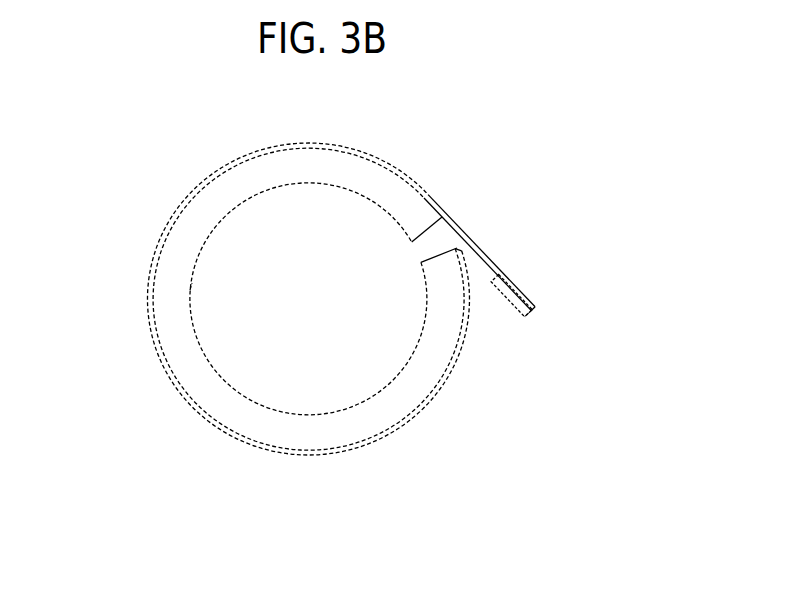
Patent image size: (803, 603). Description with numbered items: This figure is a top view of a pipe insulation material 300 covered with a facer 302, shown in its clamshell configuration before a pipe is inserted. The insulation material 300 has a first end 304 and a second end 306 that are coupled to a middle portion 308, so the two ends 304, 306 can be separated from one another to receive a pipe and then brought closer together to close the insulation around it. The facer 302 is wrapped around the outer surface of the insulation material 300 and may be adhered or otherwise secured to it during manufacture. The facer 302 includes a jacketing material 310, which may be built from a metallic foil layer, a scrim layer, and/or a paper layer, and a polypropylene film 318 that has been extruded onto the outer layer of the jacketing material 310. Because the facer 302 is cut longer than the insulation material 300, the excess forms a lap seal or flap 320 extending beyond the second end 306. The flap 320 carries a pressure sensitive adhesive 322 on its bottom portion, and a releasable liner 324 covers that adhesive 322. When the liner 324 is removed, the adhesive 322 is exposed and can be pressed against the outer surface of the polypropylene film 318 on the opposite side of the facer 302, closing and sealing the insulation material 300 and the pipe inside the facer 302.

The pipe insulation material 300 is at (195, 265).
The facer 302 is at (480, 242).
The first end 304 is at (423, 338).
The second end 306 is at (393, 218).
The middle portion 308 is at (189, 289).
The jacketing material 310 is at (200, 178).
The polypropylene film 318 is at (313, 458).
The lap seal or flap 320 is at (518, 286).
The pressure sensitive adhesive 322 is at (534, 312).
The releasable liner 324 is at (524, 314).